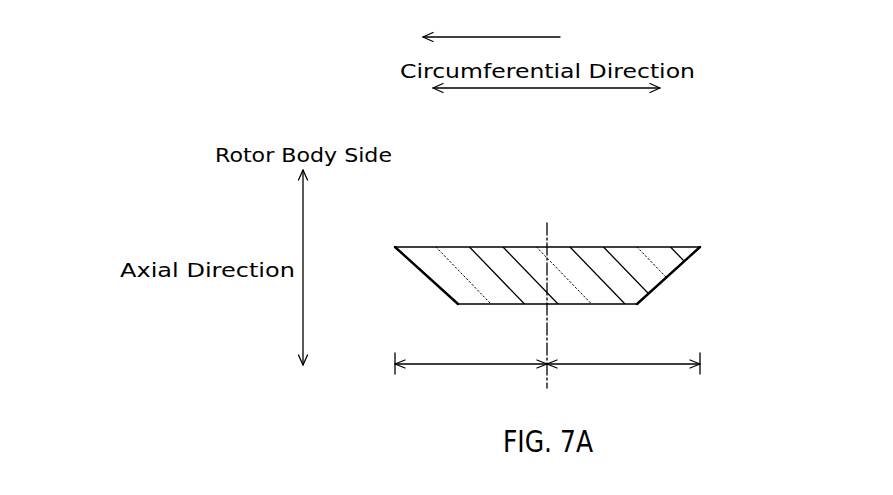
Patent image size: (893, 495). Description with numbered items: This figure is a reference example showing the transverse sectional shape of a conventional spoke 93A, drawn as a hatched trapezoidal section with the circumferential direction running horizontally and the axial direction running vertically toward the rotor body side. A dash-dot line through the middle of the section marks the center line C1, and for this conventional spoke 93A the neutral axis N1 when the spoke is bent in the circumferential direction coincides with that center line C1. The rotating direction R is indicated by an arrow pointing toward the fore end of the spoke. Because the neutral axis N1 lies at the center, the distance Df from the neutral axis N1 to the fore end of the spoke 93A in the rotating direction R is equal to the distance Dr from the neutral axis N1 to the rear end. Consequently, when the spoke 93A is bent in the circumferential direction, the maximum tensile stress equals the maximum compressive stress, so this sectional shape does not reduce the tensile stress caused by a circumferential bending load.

The spoke 93A is at (688, 232).
The center line C1 is at (545, 291).
The neutral axis N1 is at (560, 291).
The distance Df is at (471, 373).
The distance Dr is at (623, 373).
The rotating direction R is at (613, 36).